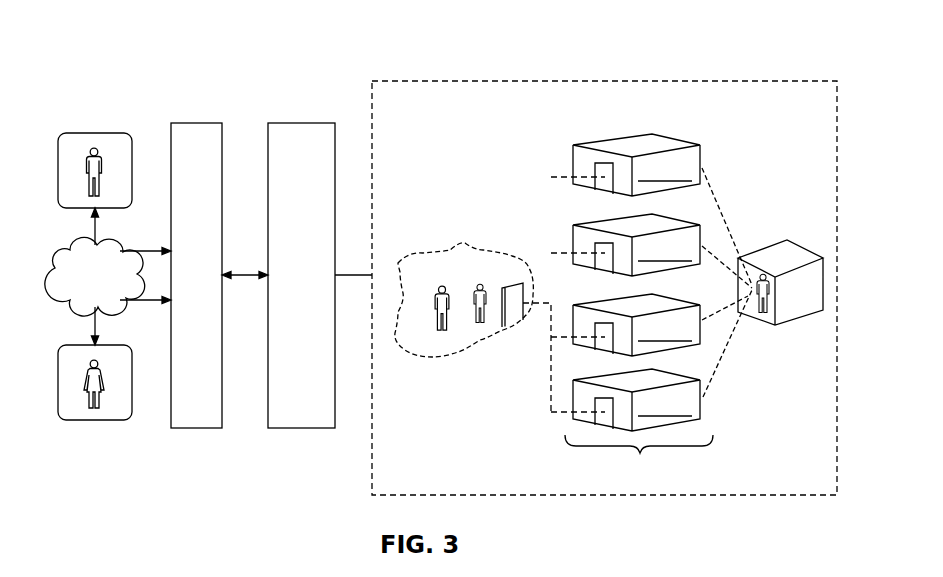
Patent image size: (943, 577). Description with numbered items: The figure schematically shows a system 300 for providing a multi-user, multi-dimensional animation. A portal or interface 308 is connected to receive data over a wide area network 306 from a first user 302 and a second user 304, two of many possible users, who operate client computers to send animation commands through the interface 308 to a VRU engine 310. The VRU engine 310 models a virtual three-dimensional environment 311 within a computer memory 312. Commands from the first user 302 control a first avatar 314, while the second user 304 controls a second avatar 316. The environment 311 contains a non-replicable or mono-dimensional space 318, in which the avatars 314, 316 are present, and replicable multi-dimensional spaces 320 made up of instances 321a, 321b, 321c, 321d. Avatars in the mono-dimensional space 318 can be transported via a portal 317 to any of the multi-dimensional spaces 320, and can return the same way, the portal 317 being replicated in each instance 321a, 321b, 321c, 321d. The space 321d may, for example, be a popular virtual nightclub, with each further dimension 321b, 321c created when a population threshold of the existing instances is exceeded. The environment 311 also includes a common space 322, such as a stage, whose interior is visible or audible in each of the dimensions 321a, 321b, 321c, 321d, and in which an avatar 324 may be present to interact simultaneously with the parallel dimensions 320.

The system 300 is at (134, 43).
The first user 302 is at (113, 133).
The second user 304 is at (118, 420).
The wide area network 306 is at (115, 287).
The portal or interface 308 is at (210, 124).
The VRU engine 310 is at (325, 123).
The virtual three-dimensional environment 311 is at (487, 100).
The computer memory 312 is at (435, 80).
The first avatar 314 is at (437, 291).
The second avatar 316 is at (486, 289).
The portal 317 is at (502, 313).
The mono-dimensional space 318 is at (432, 357).
The multi-dimensional spaces 320 is at (639, 459).
The multi-dimensional space instance 321a is at (625, 165).
The multi-dimensional space instance 321b is at (625, 245).
The multi-dimensional space instance 321c is at (625, 325).
The multi-dimensional space instance 321d is at (625, 400).
The common space 322 is at (778, 257).
The avatar 324 is at (765, 318).